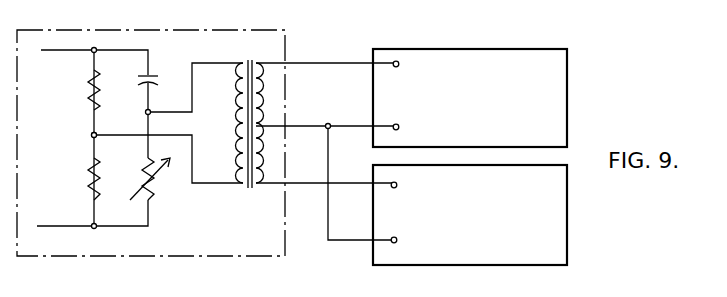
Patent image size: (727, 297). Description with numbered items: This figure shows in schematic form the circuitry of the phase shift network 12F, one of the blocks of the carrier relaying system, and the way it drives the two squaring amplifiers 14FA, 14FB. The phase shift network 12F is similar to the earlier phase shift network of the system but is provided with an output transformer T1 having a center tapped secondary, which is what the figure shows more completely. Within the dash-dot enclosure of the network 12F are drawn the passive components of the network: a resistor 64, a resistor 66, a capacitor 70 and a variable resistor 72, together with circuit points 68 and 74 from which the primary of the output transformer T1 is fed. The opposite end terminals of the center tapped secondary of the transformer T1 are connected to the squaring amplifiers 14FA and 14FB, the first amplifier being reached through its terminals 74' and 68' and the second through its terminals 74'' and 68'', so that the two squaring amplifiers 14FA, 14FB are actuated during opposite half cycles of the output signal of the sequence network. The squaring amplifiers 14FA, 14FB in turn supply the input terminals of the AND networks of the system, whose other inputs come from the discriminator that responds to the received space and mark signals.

The phase shift network 12F is at (151, 156).
The resistor 64 is at (91, 98).
The resistor 66 is at (91, 188).
The junction / output node 68 is at (76, 133).
The capacitor 70 is at (141, 76).
The variable resistor 72 is at (154, 197).
The junction / output node 74 is at (162, 103).
The output transformer T1 is at (246, 190).
The squaring amplifier 14FA is at (567, 77).
The squaring amplifier 14FB is at (567, 250).
The input terminal of squaring amplifier no. 1 74' is at (414, 63).
The input terminal of squaring amplifier no. 1 68' is at (414, 132).
The input terminal of squaring amplifier no. 2 74'' is at (413, 179).
The input terminal of squaring amplifier no. 2 68'' is at (413, 248).